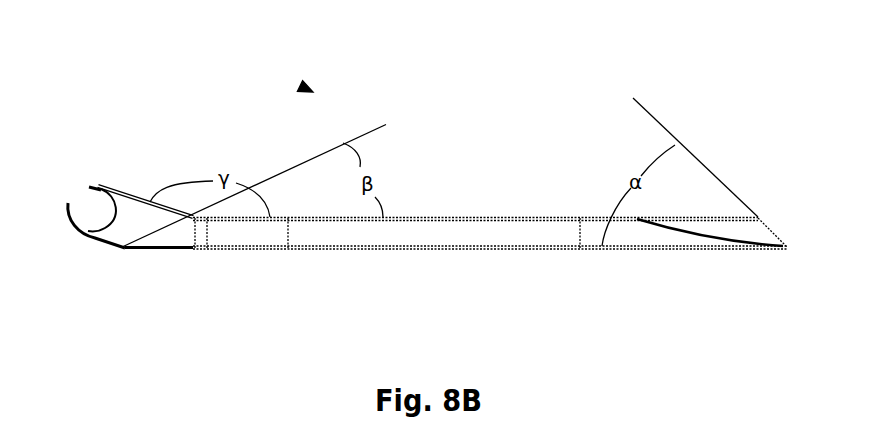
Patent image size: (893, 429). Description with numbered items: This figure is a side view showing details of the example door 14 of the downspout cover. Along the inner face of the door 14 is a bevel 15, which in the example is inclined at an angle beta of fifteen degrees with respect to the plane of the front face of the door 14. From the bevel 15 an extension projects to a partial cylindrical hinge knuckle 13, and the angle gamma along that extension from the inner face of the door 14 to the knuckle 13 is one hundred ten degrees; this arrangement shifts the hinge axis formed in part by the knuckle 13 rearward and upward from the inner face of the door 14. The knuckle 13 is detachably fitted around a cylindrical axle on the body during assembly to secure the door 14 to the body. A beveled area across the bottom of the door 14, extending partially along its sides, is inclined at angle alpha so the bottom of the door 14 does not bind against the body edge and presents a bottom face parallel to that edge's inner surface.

The partial cylindrical hinge knuckle 13 is at (100, 187).
The door 14 is at (303, 87).
The bevel 15 is at (115, 238).